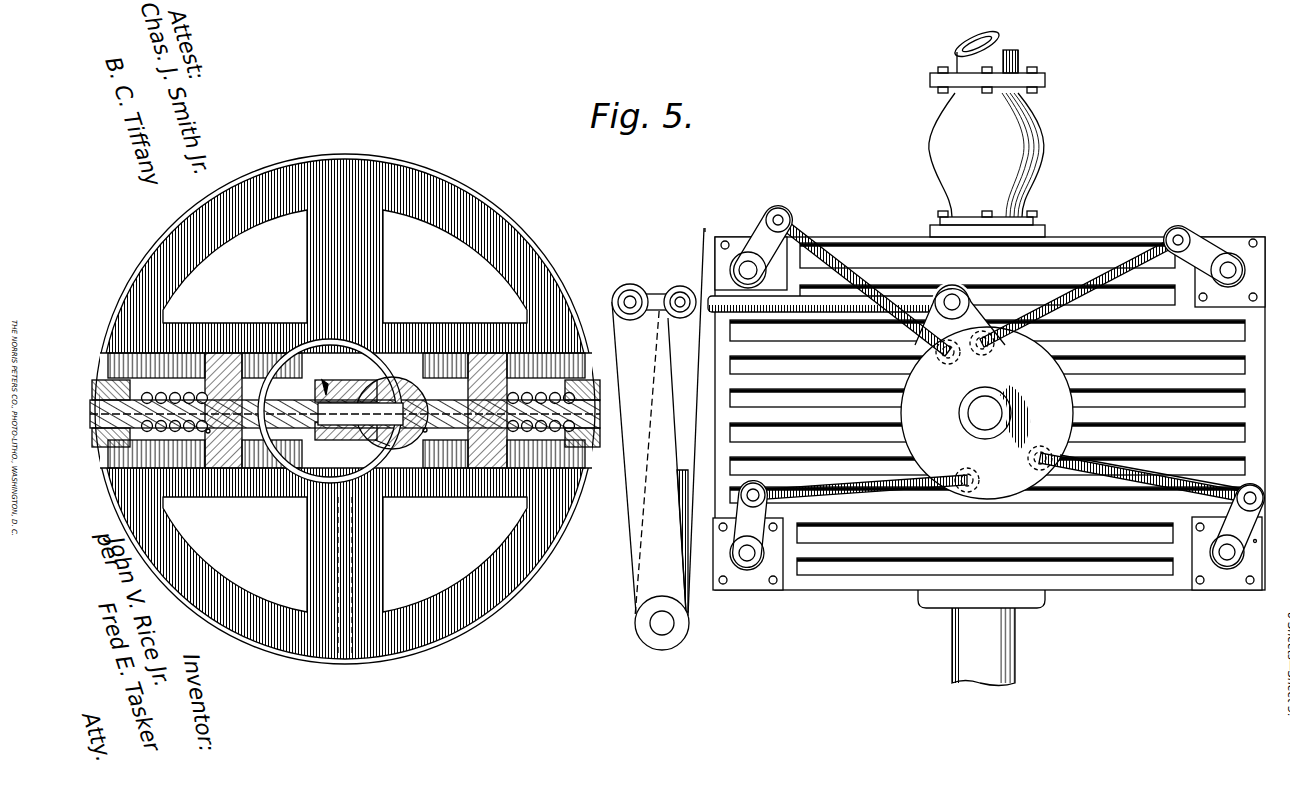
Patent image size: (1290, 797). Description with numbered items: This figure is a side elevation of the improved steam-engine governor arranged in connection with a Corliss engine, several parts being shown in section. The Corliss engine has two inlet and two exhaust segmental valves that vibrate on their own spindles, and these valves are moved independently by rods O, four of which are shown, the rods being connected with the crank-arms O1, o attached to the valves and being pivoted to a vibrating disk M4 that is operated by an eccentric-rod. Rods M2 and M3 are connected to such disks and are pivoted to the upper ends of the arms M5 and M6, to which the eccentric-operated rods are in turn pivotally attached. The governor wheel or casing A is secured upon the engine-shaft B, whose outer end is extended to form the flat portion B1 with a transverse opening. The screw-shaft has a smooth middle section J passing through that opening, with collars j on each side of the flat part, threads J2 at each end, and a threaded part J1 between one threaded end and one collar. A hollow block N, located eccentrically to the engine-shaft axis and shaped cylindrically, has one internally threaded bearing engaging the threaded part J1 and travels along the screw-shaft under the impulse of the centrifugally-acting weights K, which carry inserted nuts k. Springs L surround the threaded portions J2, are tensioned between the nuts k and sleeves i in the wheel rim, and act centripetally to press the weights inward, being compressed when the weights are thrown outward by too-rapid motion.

The governor wheel A is at (345, 409).
The engine-shaft B is at (330, 411).
The flat portion of engine-shaft B1 is at (380, 382).
The screw shaft i is at (104, 378).
The collar j is at (428, 427).
The inserted nut k is at (207, 432).
The middle section of screw-shaft J is at (388, 446).
The threaded part of screw-shaft J1 is at (323, 384).
The threaded end portion of screw-shaft J2 is at (165, 398).
The weight K is at (223, 470).
The spring L is at (358, 420).
The hollow block N is at (420, 393).
The rod M2 is at (657, 298).
The rod M3 is at (705, 232).
The vibrating disk M4 is at (986, 413).
The arm M5 is at (634, 512).
The arm M6 is at (661, 458).
The valve rod O is at (850, 240).
The crank-arm O1 is at (763, 230).
The crank-arm o is at (1268, 529).